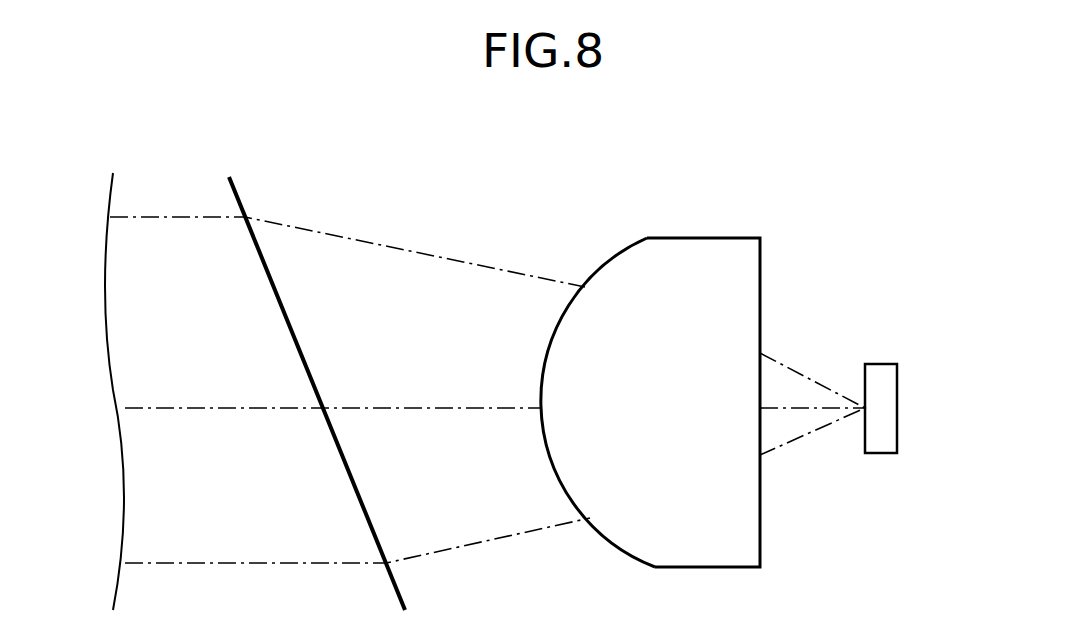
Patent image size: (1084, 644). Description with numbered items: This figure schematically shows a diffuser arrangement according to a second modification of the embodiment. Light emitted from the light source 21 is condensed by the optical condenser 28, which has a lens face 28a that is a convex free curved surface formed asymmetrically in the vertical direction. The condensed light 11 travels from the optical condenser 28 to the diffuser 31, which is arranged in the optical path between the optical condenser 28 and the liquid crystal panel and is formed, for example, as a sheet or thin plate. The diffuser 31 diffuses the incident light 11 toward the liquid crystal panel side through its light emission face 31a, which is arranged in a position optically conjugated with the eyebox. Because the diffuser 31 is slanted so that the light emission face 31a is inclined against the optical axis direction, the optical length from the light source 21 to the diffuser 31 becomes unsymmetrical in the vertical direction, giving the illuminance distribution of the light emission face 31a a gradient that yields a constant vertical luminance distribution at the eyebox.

The diffuser 31 is at (239, 163).
The light emission face 31a is at (236, 196).
The optical condenser 28 is at (683, 218).
The lens face 28a is at (607, 268).
The light 11 is at (522, 538).
The light source 21 is at (912, 376).